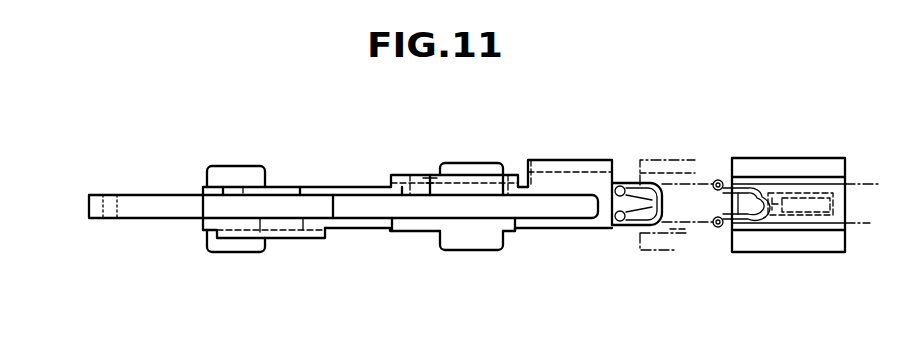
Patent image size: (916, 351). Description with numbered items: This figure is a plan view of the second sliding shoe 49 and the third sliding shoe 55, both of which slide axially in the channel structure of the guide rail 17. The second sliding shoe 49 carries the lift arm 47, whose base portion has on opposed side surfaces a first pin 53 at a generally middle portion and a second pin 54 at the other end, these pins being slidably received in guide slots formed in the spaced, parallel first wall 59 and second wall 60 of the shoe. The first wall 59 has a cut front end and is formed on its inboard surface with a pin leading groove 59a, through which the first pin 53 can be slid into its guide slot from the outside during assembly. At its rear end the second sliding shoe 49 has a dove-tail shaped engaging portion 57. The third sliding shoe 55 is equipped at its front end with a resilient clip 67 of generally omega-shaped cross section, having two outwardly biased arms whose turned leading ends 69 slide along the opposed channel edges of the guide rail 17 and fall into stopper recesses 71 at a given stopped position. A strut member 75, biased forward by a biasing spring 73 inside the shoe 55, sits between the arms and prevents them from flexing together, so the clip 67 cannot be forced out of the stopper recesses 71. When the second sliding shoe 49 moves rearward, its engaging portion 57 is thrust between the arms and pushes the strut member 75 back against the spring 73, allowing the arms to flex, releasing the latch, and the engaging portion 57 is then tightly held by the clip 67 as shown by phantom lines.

The guide rail 17 is at (872, 182).
The lift arm 47 is at (162, 221).
The second sliding shoe 49 is at (415, 233).
The first pin 53 is at (233, 188).
The second pin 54 is at (313, 223).
The third sliding shoe 55 is at (678, 243).
The engaging portion 57 is at (646, 192).
The first wall 59 is at (357, 187).
The pin leading groove 59a is at (413, 183).
The second wall 60 is at (375, 223).
The clip 67 is at (665, 194).
The outwardly turned leading ends 69 is at (620, 186).
The stopper recesses 71 is at (722, 181).
The biasing spring 73 is at (807, 197).
The strut member 75 is at (741, 206).